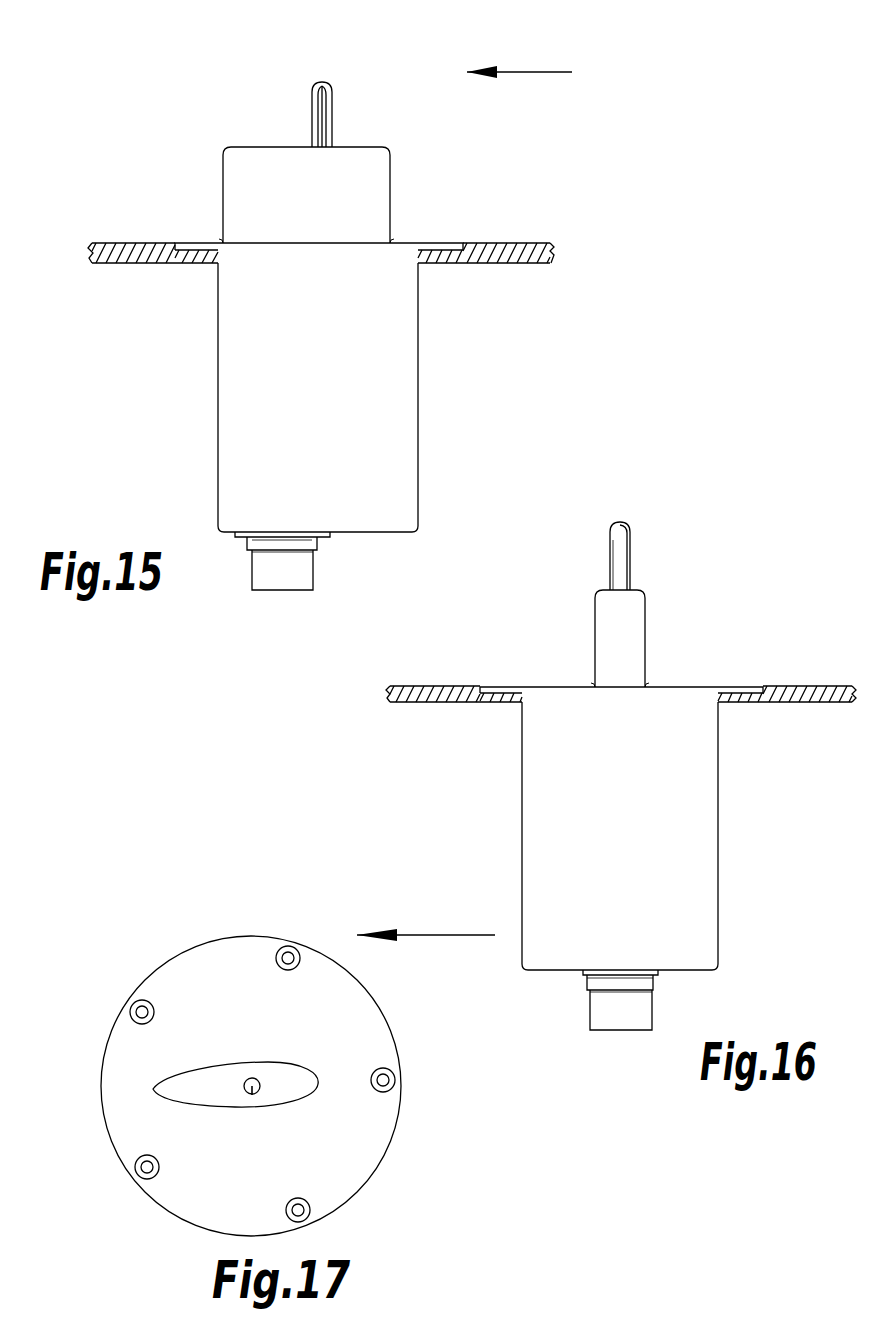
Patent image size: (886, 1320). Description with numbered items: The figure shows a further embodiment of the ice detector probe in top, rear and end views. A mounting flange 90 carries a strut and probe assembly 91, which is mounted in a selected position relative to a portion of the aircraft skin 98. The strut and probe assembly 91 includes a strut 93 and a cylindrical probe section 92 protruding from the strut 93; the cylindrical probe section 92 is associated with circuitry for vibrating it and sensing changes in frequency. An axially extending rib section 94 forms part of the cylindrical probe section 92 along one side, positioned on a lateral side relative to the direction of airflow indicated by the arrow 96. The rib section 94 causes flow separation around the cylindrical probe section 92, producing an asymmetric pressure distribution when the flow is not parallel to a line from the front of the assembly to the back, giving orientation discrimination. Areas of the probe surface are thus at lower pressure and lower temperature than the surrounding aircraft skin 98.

In FIG. 15, the mounting flange 90 is at (430, 245).
In FIG. 16, the mounting flange 90 is at (625, 687).
In FIG. 17, the mounting flange 90 is at (220, 998).
In FIG. 15, the strut and probe assembly 91 is at (313, 80).
In FIG. 16, the strut and probe assembly 91 is at (635, 522).
In FIG. 17, the strut and probe assembly 91 is at (236, 1096).
In FIG. 15, the cylindrical probe section 92 is at (313, 113).
In FIG. 16, the cylindrical probe section 92 is at (610, 553).
In FIG. 17, the cylindrical probe section 92 is at (246, 1079).
In FIG. 15, the strut 93 is at (368, 185).
In FIG. 16, the strut 93 is at (645, 630).
In FIG. 17, the strut 93 is at (300, 1063).
In FIG. 15, the axially extending rib section 94 is at (328, 99).
In FIG. 16, the axially extending rib section 94 is at (632, 560).
In FIG. 17, the axially extending rib section 94 is at (258, 1094).
In FIG. 15, the arrow 96 is at (527, 72).
In FIG. 16, the arrow 96 is at (432, 938).
In FIG. 15, the aircraft skin 98 is at (125, 242).
In FIG. 16, the aircraft skin 98 is at (452, 686).